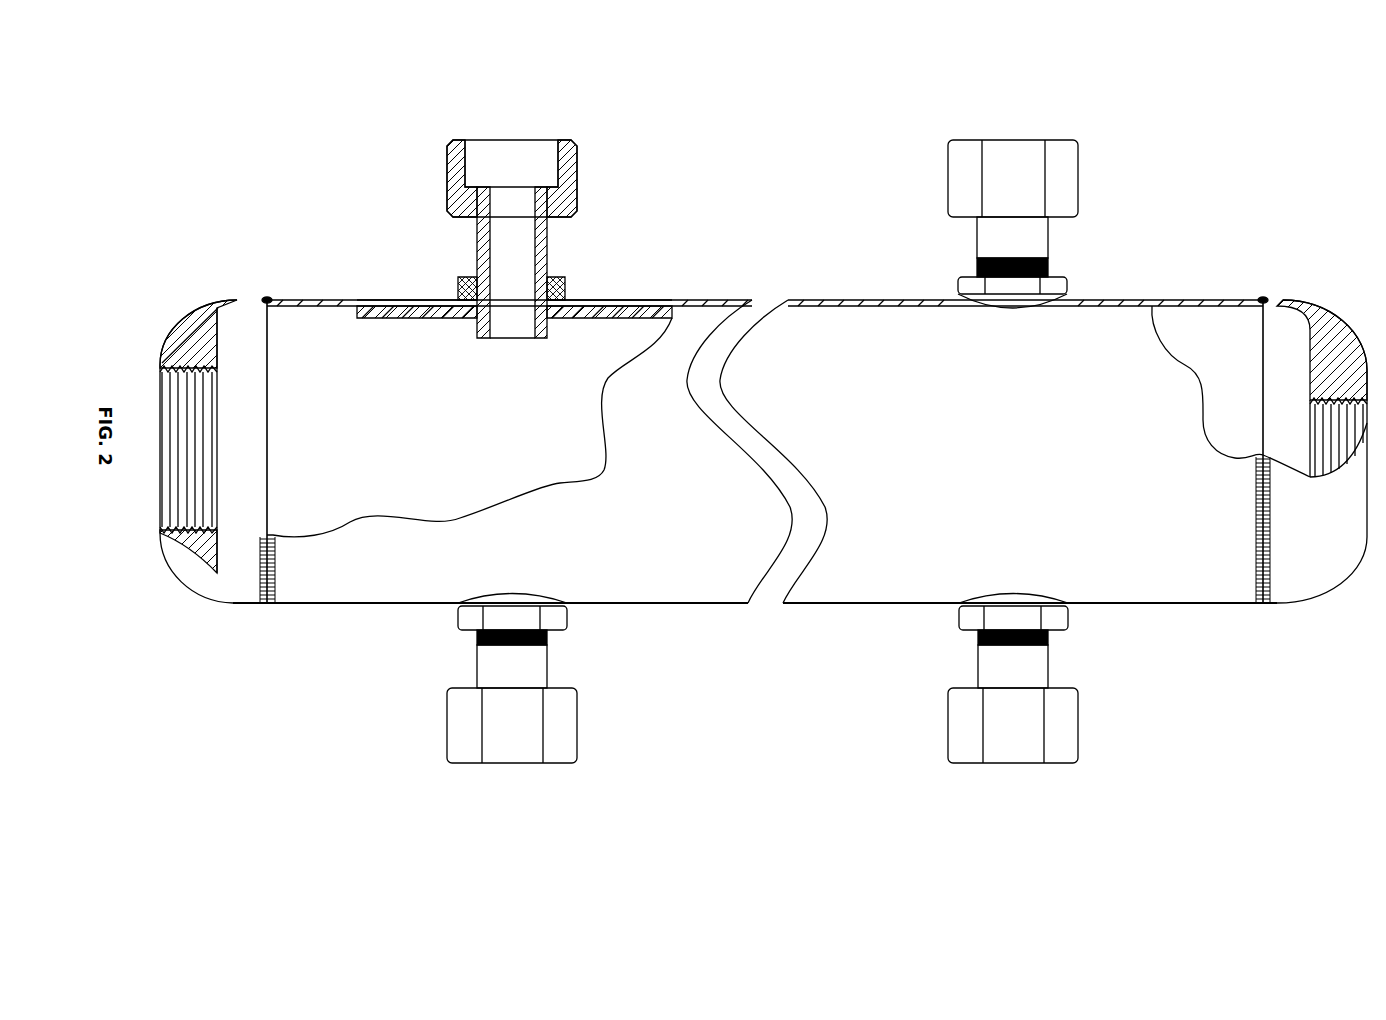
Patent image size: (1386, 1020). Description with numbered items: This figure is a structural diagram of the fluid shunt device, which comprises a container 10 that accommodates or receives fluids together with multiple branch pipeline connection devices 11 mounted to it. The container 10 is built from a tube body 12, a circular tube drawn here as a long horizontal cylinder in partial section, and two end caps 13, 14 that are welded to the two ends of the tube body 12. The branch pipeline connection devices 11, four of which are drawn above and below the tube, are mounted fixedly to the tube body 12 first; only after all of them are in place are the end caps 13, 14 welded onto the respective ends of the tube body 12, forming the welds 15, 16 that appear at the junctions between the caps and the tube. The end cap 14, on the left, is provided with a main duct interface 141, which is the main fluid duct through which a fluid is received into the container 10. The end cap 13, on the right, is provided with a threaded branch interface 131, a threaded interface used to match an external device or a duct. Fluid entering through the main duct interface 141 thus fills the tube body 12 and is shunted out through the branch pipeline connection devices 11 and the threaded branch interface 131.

The container 10 is at (1173, 200).
The pipe fitting 11 is at (508, 743).
The tube body 12 is at (1155, 563).
The end cap 13 is at (1326, 451).
The threaded branch interface 131 is at (1375, 345).
The end cap 14 is at (188, 503).
The main duct interface 141 is at (172, 458).
The weld 15 is at (265, 603).
The weld 16 is at (1262, 603).